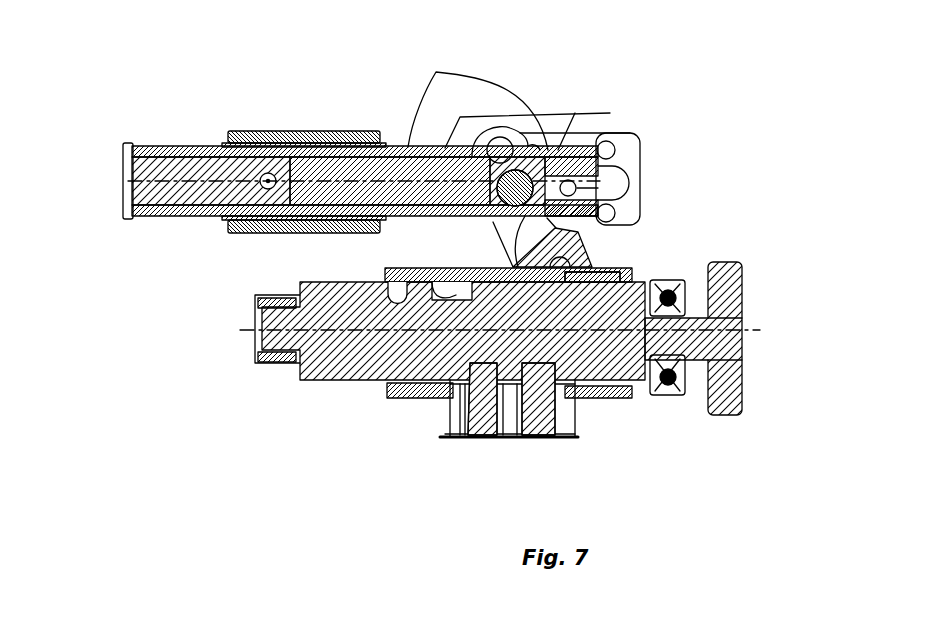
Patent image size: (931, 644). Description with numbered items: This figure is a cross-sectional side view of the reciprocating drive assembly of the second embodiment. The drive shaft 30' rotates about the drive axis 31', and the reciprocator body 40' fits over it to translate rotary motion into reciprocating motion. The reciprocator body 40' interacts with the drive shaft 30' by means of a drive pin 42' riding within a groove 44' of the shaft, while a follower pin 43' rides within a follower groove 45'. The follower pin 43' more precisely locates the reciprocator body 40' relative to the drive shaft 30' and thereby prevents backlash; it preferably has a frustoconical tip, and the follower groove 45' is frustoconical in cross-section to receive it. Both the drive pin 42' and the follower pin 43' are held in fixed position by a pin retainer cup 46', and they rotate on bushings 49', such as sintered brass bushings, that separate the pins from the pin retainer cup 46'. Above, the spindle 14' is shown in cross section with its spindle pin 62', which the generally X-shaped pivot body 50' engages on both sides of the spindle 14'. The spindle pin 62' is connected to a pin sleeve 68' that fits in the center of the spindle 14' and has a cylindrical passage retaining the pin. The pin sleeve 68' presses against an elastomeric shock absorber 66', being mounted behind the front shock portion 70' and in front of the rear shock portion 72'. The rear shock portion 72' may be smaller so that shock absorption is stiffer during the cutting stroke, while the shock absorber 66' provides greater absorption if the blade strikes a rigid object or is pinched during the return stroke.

The spindle 14' is at (354, 216).
The front shock portion 70' is at (304, 157).
The shock absorber 66' is at (528, 98).
The rear shock portion 72' is at (647, 179).
The pivot body 50' is at (576, 247).
The spindle pin 62' is at (496, 242).
The pin sleeve 68' is at (490, 225).
The follower groove 45' is at (451, 335).
The groove 44' is at (429, 271).
The reciprocator body 40' is at (425, 430).
The pin retainer cup 46' is at (428, 476).
The follower pin 43' is at (450, 504).
The bushings 49' is at (515, 426).
The drive pin 42' is at (496, 452).
The drive axis 31' is at (516, 337).
The drive shaft 30' is at (719, 362).